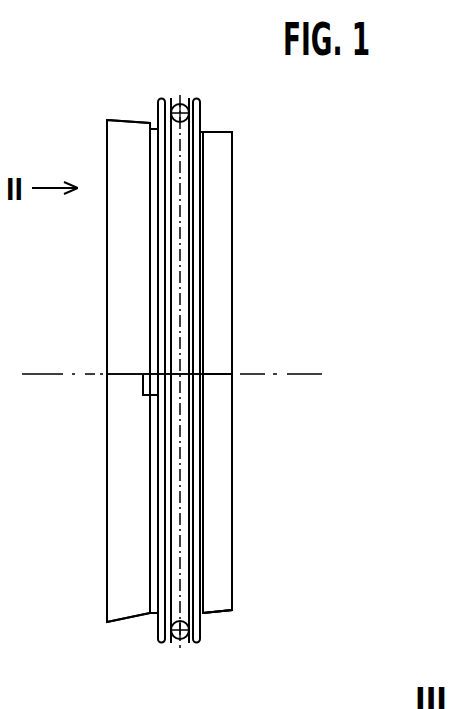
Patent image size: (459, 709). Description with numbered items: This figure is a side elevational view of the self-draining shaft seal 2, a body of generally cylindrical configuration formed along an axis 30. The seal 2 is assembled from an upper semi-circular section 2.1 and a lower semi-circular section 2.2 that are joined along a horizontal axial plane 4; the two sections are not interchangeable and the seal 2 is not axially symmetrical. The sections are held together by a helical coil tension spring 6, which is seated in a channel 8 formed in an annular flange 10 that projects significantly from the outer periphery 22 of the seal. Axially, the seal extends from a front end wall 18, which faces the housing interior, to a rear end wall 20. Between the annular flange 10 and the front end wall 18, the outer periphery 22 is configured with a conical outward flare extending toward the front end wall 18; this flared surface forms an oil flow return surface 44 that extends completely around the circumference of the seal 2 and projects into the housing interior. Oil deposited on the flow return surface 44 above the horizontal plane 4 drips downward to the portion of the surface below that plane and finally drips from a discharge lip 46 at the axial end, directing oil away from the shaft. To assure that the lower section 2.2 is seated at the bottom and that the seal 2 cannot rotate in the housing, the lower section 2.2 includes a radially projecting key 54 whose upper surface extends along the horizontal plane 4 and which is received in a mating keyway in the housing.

The self-draining shaft seal 2 is at (228, 173).
The upper semi-circular section 2.1 is at (225, 257).
The lower semi-circular section 2.2 is at (225, 477).
The horizontal axial plane 4 is at (215, 374).
The helical coil tension spring 6 is at (177, 104).
The channel 8 is at (188, 88).
The annular flange 10 is at (200, 97).
The front end wall 18 is at (95, 576).
The rear end wall 20 is at (240, 574).
The outer periphery 22 is at (215, 615).
The axis 30 is at (45, 373).
The oil flow return surface 44 is at (148, 124).
The discharge lip 46 is at (107, 622).
The key 54 is at (143, 395).